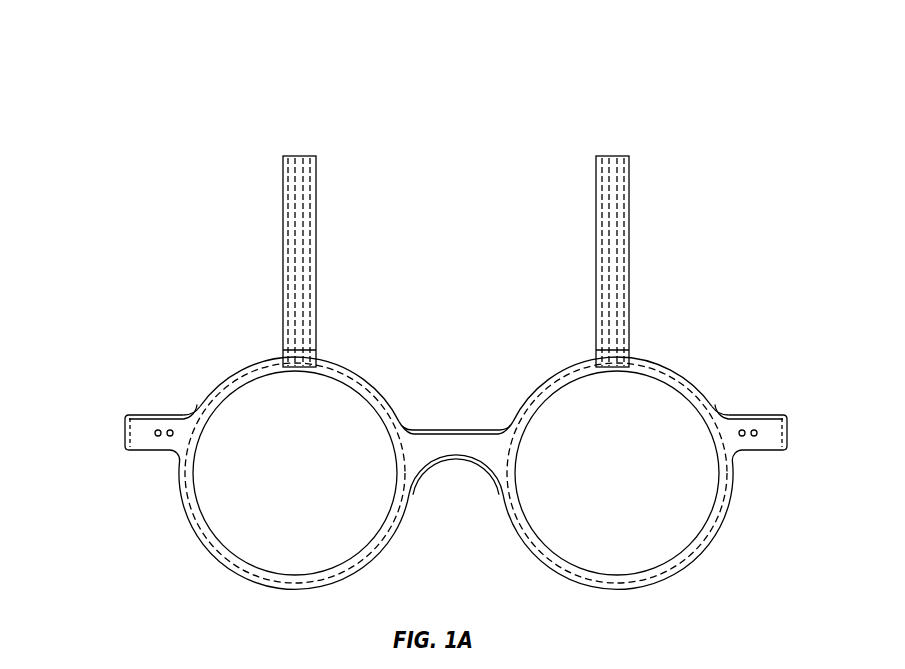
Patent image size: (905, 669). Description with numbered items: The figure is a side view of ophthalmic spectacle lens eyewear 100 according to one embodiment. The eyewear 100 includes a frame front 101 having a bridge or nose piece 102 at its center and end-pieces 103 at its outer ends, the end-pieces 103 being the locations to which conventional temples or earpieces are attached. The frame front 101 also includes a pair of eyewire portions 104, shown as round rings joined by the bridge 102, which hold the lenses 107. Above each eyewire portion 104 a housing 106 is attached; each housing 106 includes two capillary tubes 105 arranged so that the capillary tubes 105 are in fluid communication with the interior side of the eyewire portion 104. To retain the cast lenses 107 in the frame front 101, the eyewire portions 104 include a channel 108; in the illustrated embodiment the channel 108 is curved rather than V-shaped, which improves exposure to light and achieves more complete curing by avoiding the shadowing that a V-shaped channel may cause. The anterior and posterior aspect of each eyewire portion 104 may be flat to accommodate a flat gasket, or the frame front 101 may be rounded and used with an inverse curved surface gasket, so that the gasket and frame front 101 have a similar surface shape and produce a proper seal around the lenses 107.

The ophthalmic eyewear 100 is at (133, 46).
The frame front 101 is at (446, 369).
The bridge or nose piece 102 is at (470, 430).
The end-pieces 103 is at (148, 415).
The eyewire portions 104 is at (447, 483).
The capillary tubes 105 is at (418, 248).
The housing 106 is at (283, 232).
The lenses 107 is at (236, 410).
The channel 108 is at (360, 552).